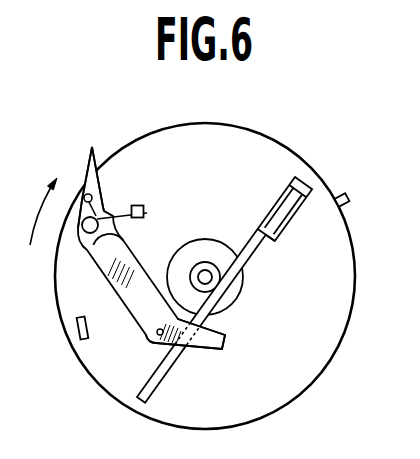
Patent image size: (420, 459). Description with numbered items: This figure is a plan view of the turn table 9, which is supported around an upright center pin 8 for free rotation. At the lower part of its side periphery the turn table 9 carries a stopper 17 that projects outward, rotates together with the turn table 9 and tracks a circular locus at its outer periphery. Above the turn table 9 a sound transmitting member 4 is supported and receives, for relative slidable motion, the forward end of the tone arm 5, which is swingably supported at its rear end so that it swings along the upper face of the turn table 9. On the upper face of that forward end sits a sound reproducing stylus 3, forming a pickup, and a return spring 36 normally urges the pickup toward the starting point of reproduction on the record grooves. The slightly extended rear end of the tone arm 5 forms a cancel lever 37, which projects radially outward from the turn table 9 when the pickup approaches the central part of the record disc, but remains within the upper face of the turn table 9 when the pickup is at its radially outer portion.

The sound reproducing stylus 3 is at (152, 336).
The sound transmitting member 4 is at (263, 248).
The tone arm 5 is at (110, 267).
The center pin 8 is at (206, 270).
The turn table 9 is at (351, 307).
The stopper 17 is at (349, 194).
The return spring 36 is at (122, 208).
The cancel lever 37 is at (87, 172).